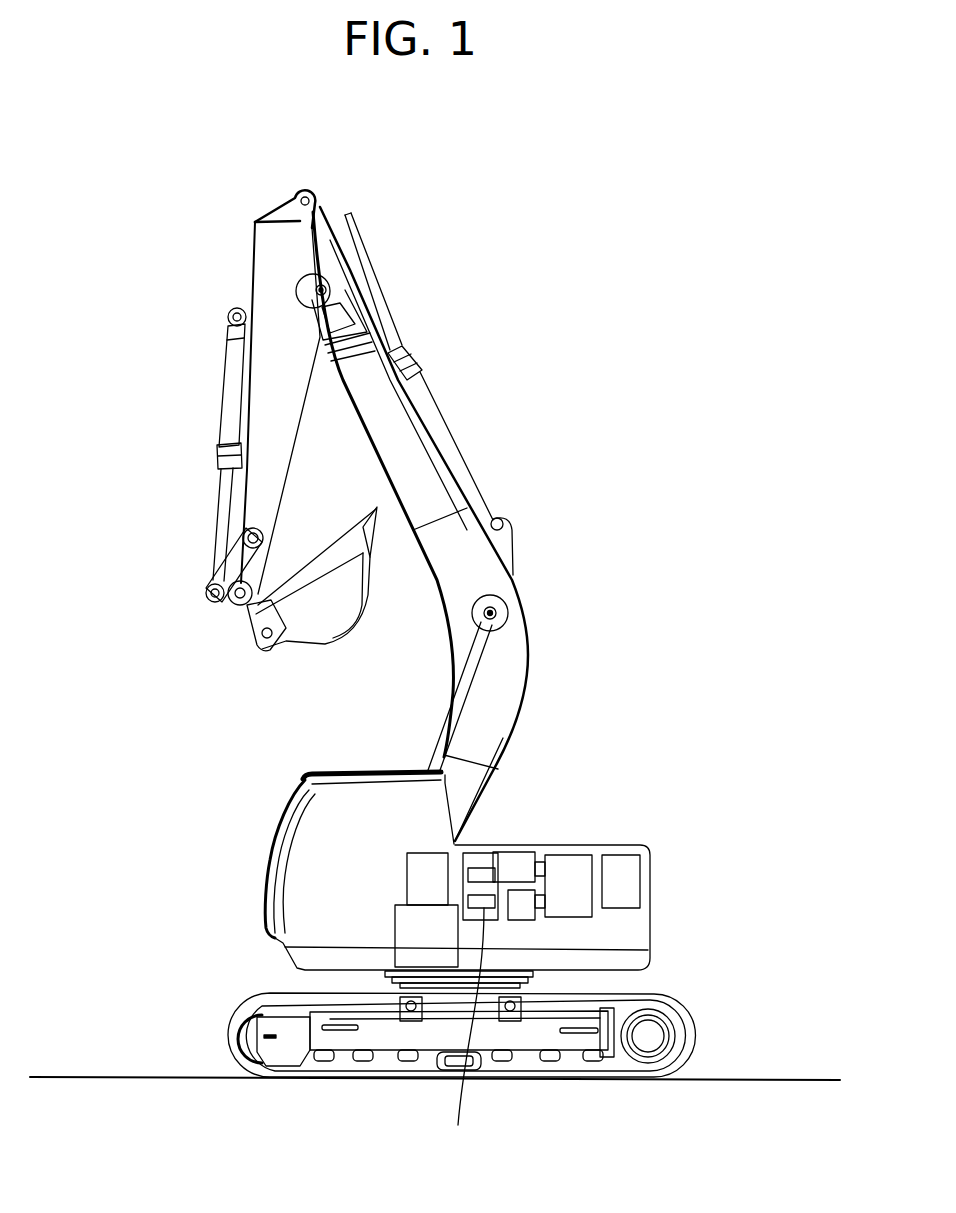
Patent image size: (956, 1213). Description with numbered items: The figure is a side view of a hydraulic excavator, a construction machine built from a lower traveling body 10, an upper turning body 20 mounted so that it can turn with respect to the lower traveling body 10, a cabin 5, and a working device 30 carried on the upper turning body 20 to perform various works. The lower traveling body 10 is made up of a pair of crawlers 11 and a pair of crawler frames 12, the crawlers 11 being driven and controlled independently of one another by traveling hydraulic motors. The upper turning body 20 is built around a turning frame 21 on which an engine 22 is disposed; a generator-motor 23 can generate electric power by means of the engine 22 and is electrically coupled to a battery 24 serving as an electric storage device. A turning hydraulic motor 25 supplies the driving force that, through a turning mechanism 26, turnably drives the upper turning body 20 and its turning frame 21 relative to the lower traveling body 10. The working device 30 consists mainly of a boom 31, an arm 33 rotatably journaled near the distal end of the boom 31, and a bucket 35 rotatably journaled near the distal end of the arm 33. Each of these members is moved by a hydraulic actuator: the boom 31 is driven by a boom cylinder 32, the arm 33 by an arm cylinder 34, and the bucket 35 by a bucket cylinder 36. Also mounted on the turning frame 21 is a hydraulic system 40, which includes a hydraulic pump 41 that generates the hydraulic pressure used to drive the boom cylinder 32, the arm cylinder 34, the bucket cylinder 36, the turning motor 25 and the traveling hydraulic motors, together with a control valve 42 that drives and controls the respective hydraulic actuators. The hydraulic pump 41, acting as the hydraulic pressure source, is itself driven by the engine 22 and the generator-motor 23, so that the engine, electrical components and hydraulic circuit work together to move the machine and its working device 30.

The cabin 5 is at (303, 873).
The lower traveling body 10 is at (243, 992).
The crawler 11 is at (697, 1022).
The crawler frame 12 is at (438, 1032).
The upper turning body 20 is at (278, 809).
The turning frame 21 is at (650, 962).
The engine 22 is at (597, 848).
The generator-motor 23 is at (520, 908).
The battery 24 is at (628, 875).
The turning hydraulic motor 25 is at (413, 878).
The turning mechanism 26 is at (413, 942).
The working device 30 is at (416, 310).
The boom 31 is at (517, 647).
The boom cylinder 32 is at (434, 718).
The arm 33 is at (262, 255).
The arm cylinder 34 is at (438, 425).
The bucket 35 is at (330, 630).
The bucket cylinder 36 is at (228, 387).
The hydraulic system 40 is at (498, 850).
The hydraulic pump 41 is at (464, 1032).
The control valve 42 is at (479, 852).